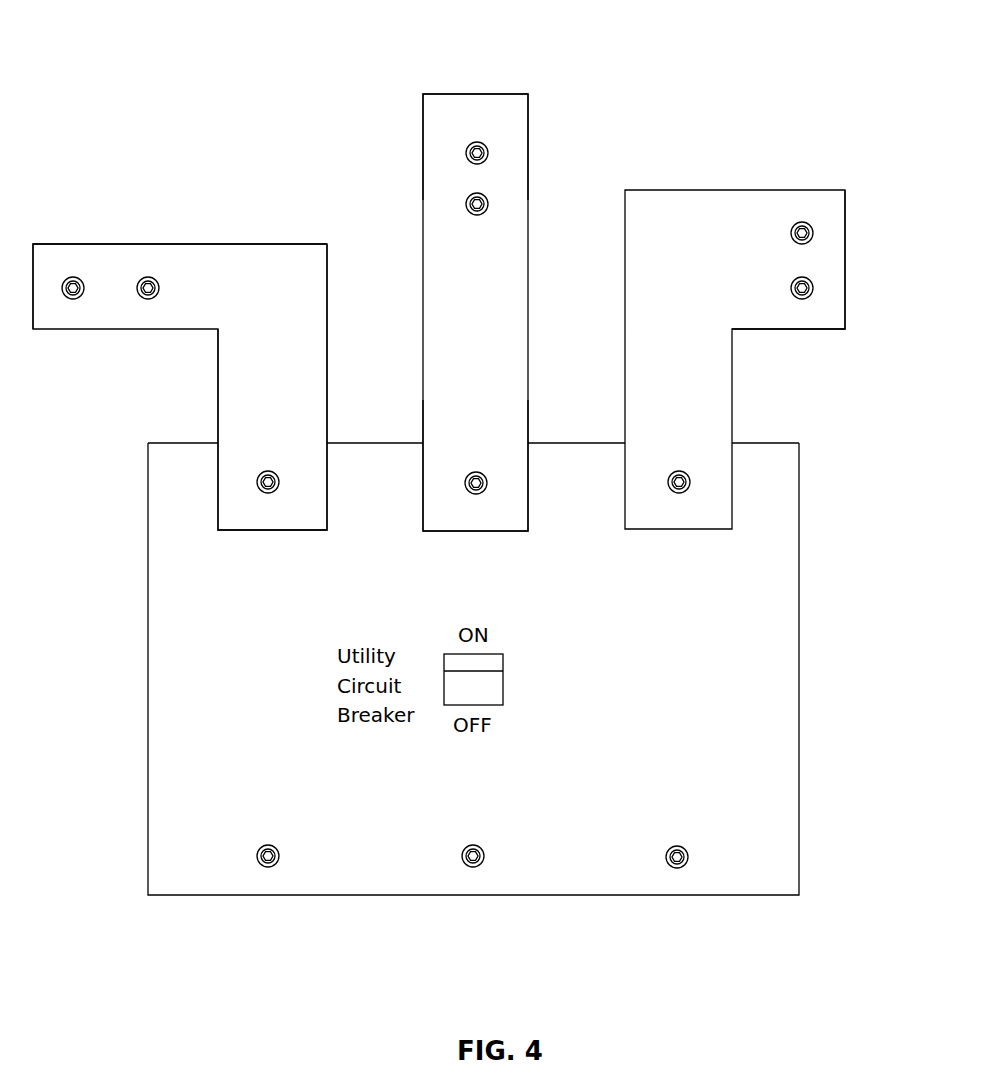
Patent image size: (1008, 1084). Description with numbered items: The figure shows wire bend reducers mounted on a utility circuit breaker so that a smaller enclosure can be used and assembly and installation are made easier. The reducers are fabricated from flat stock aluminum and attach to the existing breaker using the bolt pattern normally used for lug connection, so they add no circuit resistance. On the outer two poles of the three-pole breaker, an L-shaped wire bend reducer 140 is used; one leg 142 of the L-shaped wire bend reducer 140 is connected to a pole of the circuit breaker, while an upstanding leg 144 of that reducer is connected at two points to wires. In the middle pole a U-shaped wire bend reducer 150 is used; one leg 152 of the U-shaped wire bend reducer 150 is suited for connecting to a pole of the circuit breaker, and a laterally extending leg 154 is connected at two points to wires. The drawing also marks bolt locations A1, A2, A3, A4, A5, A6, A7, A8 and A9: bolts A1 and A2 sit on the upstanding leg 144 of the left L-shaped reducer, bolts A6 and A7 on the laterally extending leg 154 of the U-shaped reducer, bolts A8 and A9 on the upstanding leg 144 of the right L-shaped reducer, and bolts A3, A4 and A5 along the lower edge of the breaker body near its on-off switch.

The wire bend reducer 140 is at (94, 323).
The leg 142 is at (238, 418).
The upstanding leg 144 is at (46, 256).
The wire bend reducer 150 is at (525, 185).
The leg 152 is at (430, 482).
The laterally extending leg 154 is at (430, 120).
The bolt attachment point A1 is at (76, 266).
The bolt attachment point A2 is at (152, 266).
The bolt attachment point A3 is at (259, 864).
The bolt attachment point A4 is at (465, 864).
The bolt attachment point A5 is at (670, 866).
The bolt attachment point A6 is at (479, 141).
The bolt attachment point A7 is at (484, 199).
The bolt attachment point A8 is at (811, 230).
The bolt attachment point A9 is at (813, 286).